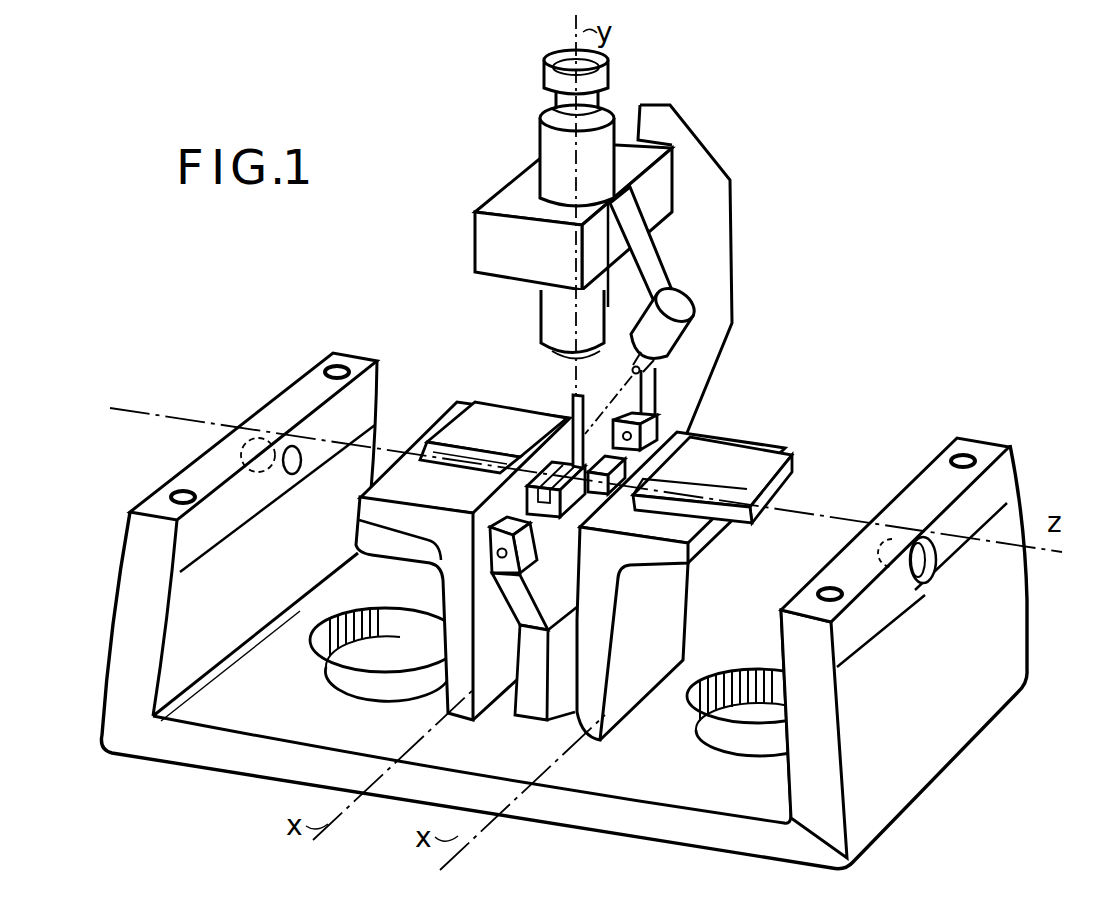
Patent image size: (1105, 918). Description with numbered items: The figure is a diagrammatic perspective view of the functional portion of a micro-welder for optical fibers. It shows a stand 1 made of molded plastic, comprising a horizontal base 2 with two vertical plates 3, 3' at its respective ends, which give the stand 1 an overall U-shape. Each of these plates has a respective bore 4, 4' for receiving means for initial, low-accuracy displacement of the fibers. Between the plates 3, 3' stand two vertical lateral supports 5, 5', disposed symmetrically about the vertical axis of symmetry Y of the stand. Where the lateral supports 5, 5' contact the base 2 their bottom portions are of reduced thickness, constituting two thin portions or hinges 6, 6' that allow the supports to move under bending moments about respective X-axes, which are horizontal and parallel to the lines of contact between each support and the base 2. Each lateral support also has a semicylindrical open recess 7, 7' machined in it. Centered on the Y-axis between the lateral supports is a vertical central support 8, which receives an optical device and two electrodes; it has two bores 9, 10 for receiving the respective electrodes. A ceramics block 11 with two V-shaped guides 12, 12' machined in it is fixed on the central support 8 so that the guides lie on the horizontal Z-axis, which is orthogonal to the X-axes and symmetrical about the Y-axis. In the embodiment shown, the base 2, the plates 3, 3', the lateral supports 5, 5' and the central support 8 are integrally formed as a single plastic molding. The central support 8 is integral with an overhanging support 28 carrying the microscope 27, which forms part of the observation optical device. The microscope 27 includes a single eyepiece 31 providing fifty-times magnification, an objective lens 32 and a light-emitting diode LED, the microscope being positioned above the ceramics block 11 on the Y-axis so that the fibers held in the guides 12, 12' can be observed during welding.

The stand 1 is at (283, 376).
The horizontal base 2 is at (253, 763).
The vertical plate 3 is at (213, 537).
The vertical plate 3' is at (895, 648).
The bore 4 is at (277, 491).
The bore 4' is at (927, 582).
The vertical lateral support 5 is at (463, 561).
The vertical lateral support 5' is at (681, 586).
The hinge 6 is at (385, 676).
The hinge 6' is at (709, 728).
The open recess 7 is at (493, 419).
The open recess 7' is at (714, 456).
The vertical central support 8 is at (533, 697).
The bore 9 is at (502, 558).
The bore 10 is at (648, 438).
The ceramics block 11 is at (553, 447).
The V-shaped guide 12 is at (543, 466).
The V-shaped guide 12' is at (630, 495).
The microscope 27 is at (516, 322).
The overhanging support 28 is at (713, 237).
The eyepiece 31 is at (557, 151).
The objective lens 32 is at (588, 352).
The light-emitting diode LED is at (665, 334).